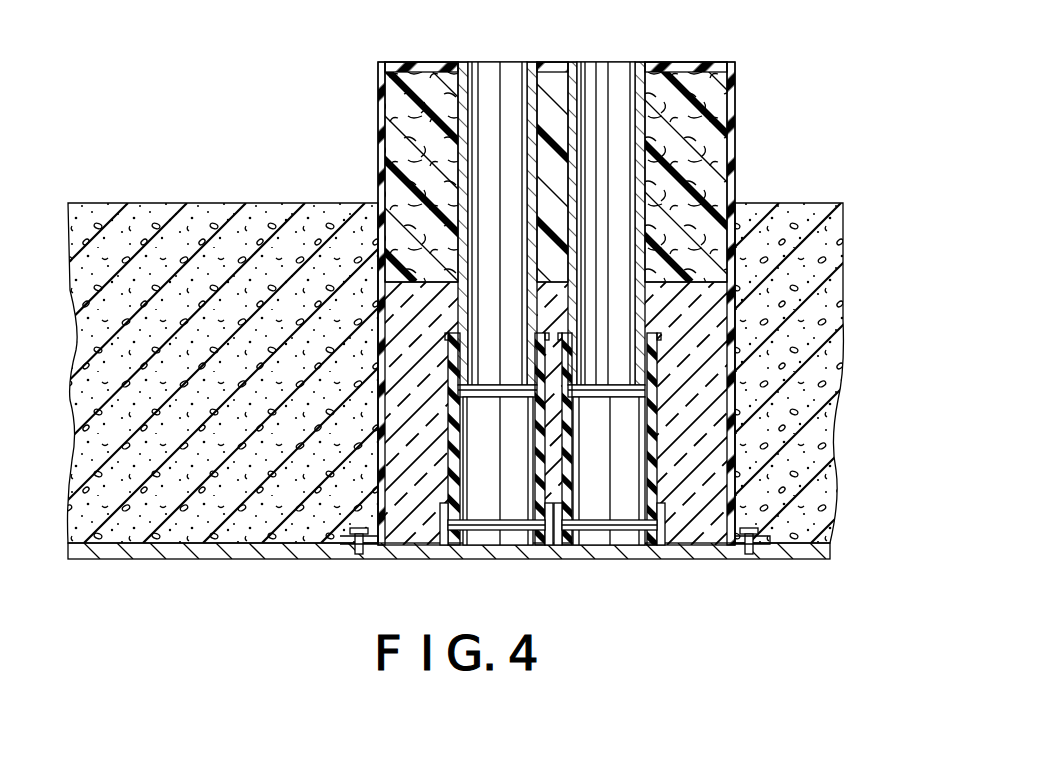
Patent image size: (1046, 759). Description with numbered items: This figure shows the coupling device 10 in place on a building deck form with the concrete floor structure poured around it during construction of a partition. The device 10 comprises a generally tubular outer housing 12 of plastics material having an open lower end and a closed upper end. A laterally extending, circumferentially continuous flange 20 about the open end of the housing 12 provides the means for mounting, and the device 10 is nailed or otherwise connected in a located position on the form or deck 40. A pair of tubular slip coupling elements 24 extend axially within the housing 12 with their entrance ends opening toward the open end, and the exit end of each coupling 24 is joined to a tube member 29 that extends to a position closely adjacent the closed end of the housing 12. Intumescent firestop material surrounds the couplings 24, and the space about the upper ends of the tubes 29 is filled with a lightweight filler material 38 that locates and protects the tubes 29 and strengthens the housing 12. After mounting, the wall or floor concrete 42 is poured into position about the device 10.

The coupling device 10 is at (544, 311).
The outer housing 12 is at (738, 165).
The flange 20 is at (780, 562).
The tubular coupling elements 24 is at (510, 492).
The tube member 29 is at (500, 83).
The filler material 38 is at (405, 150).
The form or deck 40 is at (168, 550).
The concrete 42 is at (208, 215).